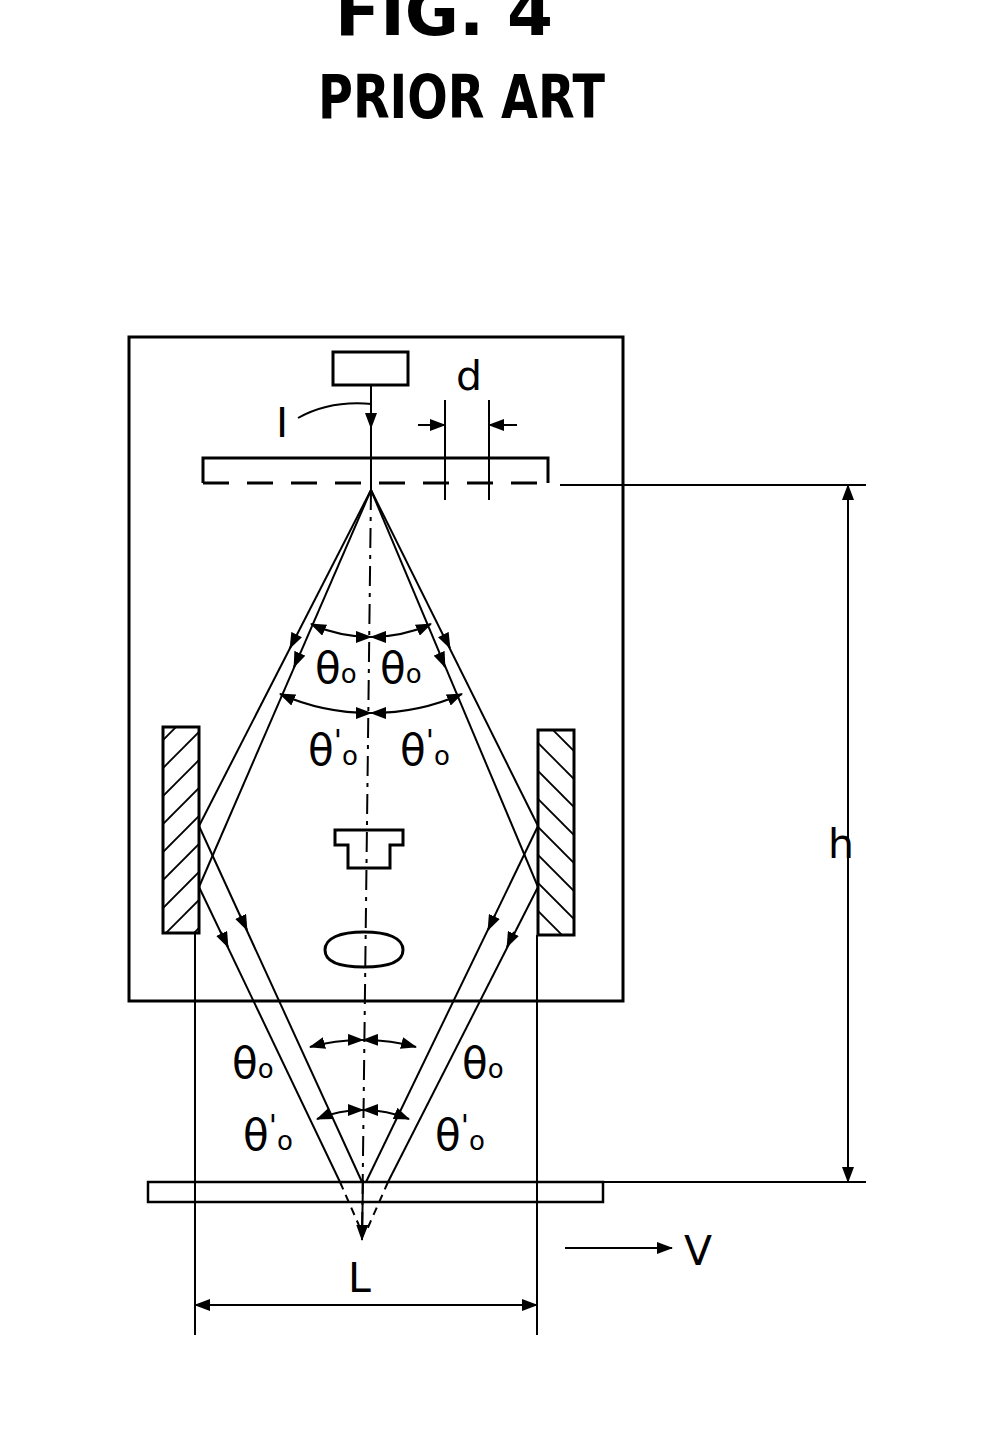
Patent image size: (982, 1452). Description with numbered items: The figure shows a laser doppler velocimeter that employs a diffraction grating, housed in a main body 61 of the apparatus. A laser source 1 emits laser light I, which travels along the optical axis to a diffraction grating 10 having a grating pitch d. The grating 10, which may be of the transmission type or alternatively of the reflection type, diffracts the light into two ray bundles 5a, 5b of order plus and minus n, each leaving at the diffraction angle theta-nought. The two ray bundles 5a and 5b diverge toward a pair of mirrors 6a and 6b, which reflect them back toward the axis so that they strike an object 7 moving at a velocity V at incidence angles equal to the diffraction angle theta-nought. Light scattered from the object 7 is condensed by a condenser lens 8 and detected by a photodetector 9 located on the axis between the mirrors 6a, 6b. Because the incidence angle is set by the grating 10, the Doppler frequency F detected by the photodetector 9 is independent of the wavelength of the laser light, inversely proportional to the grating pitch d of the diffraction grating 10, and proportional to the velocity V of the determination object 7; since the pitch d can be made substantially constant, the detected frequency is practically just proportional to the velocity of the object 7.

The laser source 1 is at (333, 367).
The main body 61 is at (595, 337).
The diffraction grating 10 is at (548, 460).
The ray bundle 5a is at (317, 596).
The ray bundle 5b is at (412, 568).
The mirror 6a is at (163, 757).
The mirror 6b is at (574, 752).
The photodetector 9 is at (353, 830).
The condenser lens 8 is at (330, 942).
The object 7 is at (238, 1182).